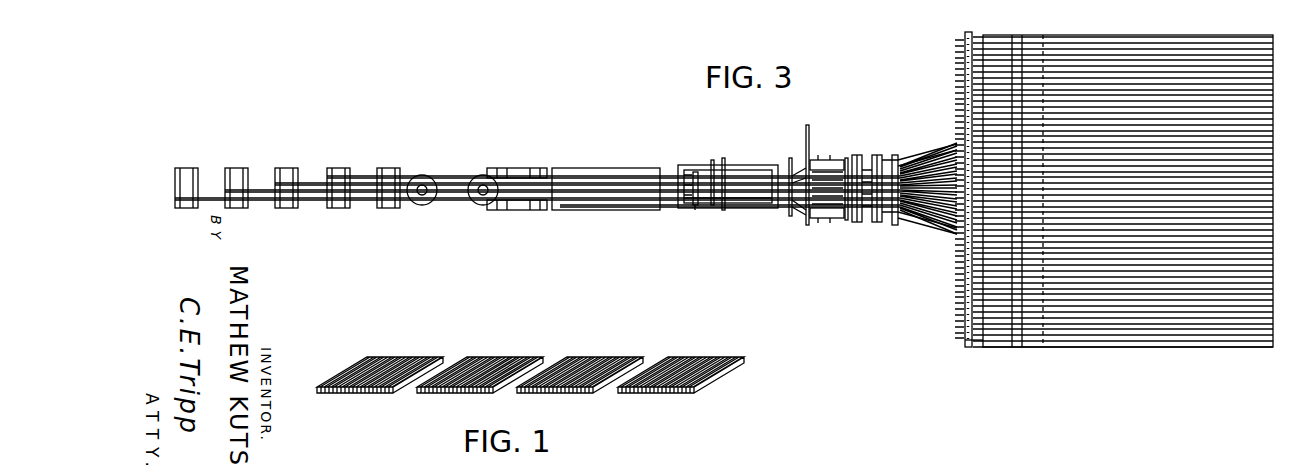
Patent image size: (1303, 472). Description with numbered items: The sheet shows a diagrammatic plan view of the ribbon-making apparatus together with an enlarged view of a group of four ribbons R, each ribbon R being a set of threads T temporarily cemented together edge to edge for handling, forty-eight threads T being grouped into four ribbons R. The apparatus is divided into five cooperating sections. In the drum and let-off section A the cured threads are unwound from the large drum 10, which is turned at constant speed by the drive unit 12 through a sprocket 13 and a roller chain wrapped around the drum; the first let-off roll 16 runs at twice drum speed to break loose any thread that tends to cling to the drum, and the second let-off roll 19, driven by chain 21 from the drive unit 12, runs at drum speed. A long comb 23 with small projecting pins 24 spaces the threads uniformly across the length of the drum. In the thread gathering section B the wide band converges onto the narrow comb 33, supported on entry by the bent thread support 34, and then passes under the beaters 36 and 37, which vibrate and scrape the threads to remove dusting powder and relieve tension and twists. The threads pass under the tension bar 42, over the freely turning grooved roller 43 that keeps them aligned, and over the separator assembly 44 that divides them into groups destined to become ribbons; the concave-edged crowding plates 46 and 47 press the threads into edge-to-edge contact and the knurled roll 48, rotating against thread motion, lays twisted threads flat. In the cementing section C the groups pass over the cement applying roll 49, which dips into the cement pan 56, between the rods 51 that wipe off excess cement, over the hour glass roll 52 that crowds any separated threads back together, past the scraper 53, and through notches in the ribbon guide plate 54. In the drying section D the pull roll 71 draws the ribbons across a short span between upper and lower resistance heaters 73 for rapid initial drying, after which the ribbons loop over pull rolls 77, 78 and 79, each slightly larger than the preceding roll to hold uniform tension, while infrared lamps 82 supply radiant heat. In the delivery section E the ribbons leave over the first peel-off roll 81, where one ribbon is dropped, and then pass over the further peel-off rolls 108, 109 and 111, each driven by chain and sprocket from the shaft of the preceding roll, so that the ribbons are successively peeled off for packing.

In FIG. 3, the drum 10 is at (1190, 346).
In FIG. 3, the drive unit 12 is at (1023, 50).
In FIG. 3, the sprocket 13 is at (1082, 173).
In FIG. 3, the first let-off roll 16 is at (1000, 348).
In FIG. 3, the second let-off roll 19 is at (1018, 350).
In FIG. 3, the chain 21 is at (975, 50).
In FIG. 3, the long comb 23 is at (965, 40).
In FIG. 3, the projecting pins 24 is at (960, 342).
In FIG. 3, the narrow comb 33 is at (896, 155).
In FIG. 3, the bent thread support 34 is at (918, 150).
In FIG. 3, the beater 36 is at (870, 225).
In FIG. 3, the beater 37 is at (856, 225).
In FIG. 3, the tension bar 42 is at (848, 160).
In FIG. 3, the grooved roller 43 is at (832, 222).
In FIG. 3, the separator assembly 44 is at (822, 218).
In FIG. 3, the crowding plate 46 is at (807, 125).
In FIG. 3, the crowding plate 47 is at (791, 158).
In FIG. 3, the knurled roll 48 is at (772, 172).
In FIG. 3, the cement applying roll 49 is at (740, 208).
In FIG. 3, the rods 51 is at (716, 162).
In FIG. 3, the hour glass roll 52 is at (697, 207).
In FIG. 3, the scraper 53 is at (699, 170).
In FIG. 3, the ribbon guide plate 54 is at (684, 182).
In FIG. 3, the cement pan 56 is at (721, 212).
In FIG. 3, the pull roll 71 is at (540, 200).
In FIG. 3, the resistance heaters 73 is at (618, 178).
In FIG. 3, the pull roll 77 is at (490, 208).
In FIG. 3, the pull roll 78 is at (388, 168).
In FIG. 3, the pull roll 79 is at (520, 170).
In FIG. 3, the first peel-off roll 81 is at (350, 168).
In FIG. 3, the infrared lamps 82 is at (426, 200).
In FIG. 3, the peel-off roll 108 is at (288, 208).
In FIG. 3, the peel-off roll 109 is at (257, 166).
In FIG. 3, the peel-off roll 111 is at (192, 208).
In FIG. 3, the drum and let-off section A is at (1172, 352).
In FIG. 3, the thread gathering section B is at (866, 130).
In FIG. 3, the cementing section C is at (727, 210).
In FIG. 3, the drying section D is at (540, 142).
In FIG. 3, the delivery section E is at (286, 150).
In FIG. 1, the ribbon R is at (478, 355).
In FIG. 3, the thread T is at (1209, 45).
In FIG. 1, the thread T is at (451, 392).